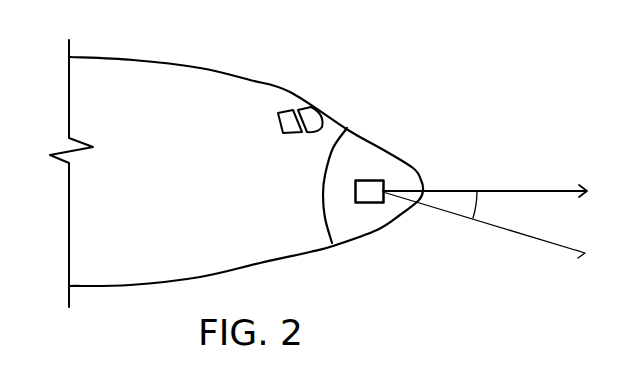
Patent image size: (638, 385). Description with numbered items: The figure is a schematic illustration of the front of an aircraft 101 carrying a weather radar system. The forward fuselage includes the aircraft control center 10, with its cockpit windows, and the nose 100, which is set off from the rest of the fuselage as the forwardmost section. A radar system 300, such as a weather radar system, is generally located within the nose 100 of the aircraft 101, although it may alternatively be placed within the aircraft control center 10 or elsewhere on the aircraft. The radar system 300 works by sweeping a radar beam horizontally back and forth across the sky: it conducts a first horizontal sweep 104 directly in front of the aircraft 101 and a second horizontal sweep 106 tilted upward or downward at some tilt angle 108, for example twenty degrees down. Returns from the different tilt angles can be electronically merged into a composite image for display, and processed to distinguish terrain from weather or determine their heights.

The aircraft control center 10 is at (280, 102).
The nose 100 is at (348, 147).
The aircraft 101 is at (410, 43).
The first horizontal sweep 104 is at (558, 189).
The second horizontal sweep 106 is at (525, 236).
The tilt angle 108 is at (480, 192).
The radar system 300 is at (367, 193).